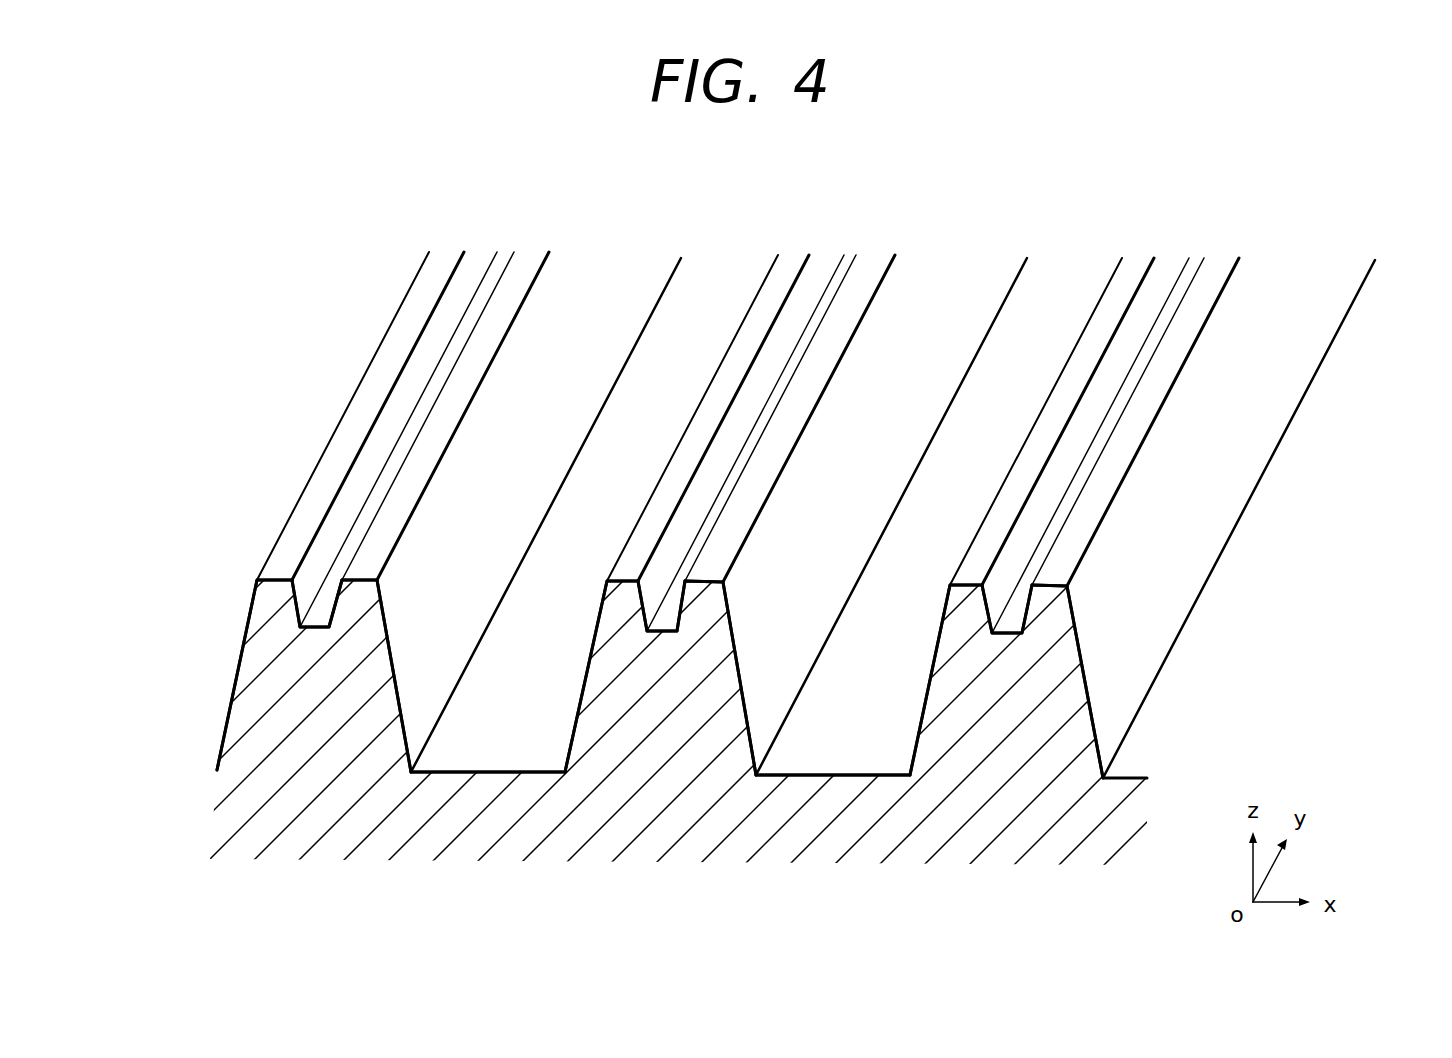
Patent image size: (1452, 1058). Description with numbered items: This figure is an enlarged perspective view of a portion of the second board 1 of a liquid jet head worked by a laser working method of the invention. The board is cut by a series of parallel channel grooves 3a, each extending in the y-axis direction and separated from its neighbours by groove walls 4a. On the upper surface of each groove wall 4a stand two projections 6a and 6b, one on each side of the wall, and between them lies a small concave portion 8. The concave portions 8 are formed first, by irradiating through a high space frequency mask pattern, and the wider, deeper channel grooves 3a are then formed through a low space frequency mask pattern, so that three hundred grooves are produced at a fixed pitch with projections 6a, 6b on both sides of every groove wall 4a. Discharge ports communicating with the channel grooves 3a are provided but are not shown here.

The grooved substrate (stamper / optical element) 1 is at (1062, 256).
The channel grooves 3a is at (499, 752).
The groove walls 4a is at (314, 745).
The projection 6a is at (298, 527).
The projection 6b is at (457, 400).
The concave portion 8 is at (328, 606).